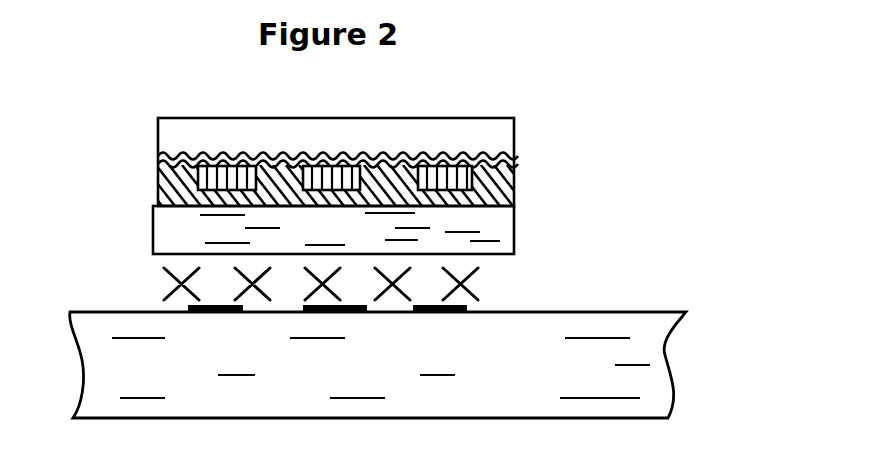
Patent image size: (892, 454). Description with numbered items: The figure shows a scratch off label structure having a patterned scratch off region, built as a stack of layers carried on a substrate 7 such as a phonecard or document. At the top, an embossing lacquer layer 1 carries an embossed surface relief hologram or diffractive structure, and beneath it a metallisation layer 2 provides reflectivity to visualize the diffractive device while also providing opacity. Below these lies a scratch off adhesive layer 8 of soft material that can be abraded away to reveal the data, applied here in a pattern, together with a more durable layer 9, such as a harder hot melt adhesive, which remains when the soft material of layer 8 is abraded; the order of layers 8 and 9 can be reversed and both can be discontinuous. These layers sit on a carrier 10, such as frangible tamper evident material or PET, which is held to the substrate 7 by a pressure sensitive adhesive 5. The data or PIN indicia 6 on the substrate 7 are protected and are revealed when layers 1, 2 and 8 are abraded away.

The embossing lacquer layer 1 is at (484, 135).
The metallisation layer 2 is at (490, 155).
The scratch off adhesive layer 8 is at (500, 176).
The durable layer 9 is at (505, 194).
The carrier 10 is at (476, 230).
The pressure sensitive adhesive 5 is at (215, 282).
The data or PIN indicia 6 is at (467, 312).
The substrate 7 is at (672, 364).